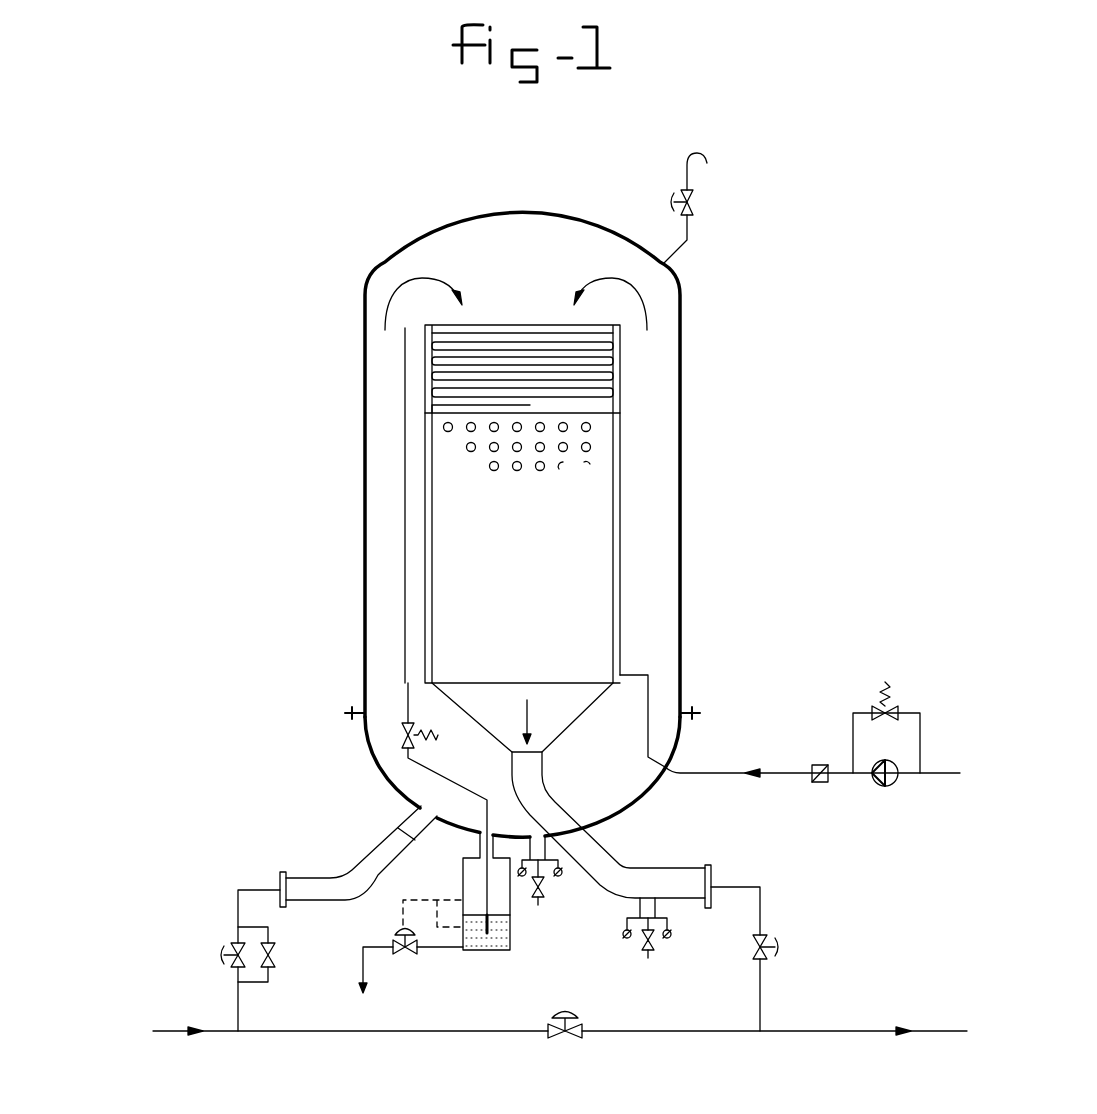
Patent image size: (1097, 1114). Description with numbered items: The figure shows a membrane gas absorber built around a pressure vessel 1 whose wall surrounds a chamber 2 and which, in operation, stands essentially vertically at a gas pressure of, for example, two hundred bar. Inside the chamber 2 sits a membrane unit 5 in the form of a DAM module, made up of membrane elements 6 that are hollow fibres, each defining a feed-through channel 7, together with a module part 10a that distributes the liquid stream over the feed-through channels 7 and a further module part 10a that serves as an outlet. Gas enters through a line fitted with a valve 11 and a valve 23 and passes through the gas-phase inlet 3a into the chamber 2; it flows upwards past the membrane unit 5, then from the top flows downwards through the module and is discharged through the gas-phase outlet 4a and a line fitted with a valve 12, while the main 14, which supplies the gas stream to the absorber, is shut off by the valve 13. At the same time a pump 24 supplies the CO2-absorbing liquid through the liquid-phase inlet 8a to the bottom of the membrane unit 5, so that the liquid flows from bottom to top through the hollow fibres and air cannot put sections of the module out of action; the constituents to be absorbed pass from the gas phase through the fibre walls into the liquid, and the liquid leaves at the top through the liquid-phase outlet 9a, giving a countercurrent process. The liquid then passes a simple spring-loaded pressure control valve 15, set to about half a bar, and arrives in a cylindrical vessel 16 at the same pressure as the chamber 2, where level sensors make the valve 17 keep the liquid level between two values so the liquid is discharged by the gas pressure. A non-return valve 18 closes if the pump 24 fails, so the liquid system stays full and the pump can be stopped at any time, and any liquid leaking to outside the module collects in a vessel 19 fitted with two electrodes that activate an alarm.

The pressure vessel 1 is at (683, 326).
The chamber 2 is at (585, 255).
The membrane unit 5 is at (498, 322).
The membrane element 6 is at (430, 357).
The feed-through channel 7 is at (432, 337).
The liquid-phase inlet 8a is at (650, 695).
The liquid-phase outlet 9a is at (405, 527).
The module part 10a is at (432, 427).
The valve 11 is at (238, 945).
The valve 12 is at (764, 940).
The valve 13 is at (565, 1040).
The main 14 is at (178, 1030).
The pressure control valve 15 is at (408, 750).
The cylindrical vessel 16 is at (480, 940).
The valve 17 is at (405, 960).
The non-return valve 18 is at (818, 765).
The vessel 19 is at (540, 898).
The valve 23 is at (275, 955).
The pump 24 is at (883, 787).
The gas-phase inlet 3a is at (327, 888).
The gas-phase outlet 4a is at (667, 888).